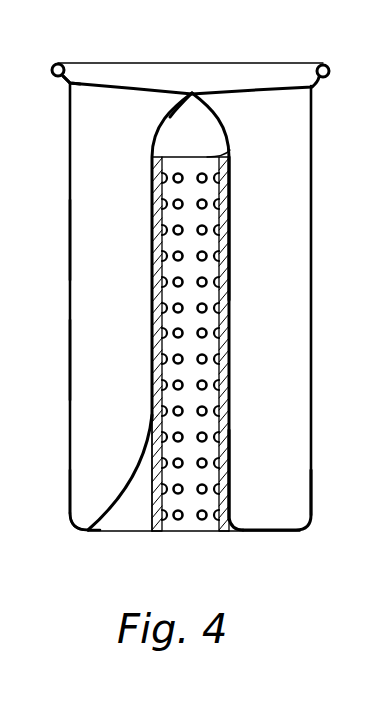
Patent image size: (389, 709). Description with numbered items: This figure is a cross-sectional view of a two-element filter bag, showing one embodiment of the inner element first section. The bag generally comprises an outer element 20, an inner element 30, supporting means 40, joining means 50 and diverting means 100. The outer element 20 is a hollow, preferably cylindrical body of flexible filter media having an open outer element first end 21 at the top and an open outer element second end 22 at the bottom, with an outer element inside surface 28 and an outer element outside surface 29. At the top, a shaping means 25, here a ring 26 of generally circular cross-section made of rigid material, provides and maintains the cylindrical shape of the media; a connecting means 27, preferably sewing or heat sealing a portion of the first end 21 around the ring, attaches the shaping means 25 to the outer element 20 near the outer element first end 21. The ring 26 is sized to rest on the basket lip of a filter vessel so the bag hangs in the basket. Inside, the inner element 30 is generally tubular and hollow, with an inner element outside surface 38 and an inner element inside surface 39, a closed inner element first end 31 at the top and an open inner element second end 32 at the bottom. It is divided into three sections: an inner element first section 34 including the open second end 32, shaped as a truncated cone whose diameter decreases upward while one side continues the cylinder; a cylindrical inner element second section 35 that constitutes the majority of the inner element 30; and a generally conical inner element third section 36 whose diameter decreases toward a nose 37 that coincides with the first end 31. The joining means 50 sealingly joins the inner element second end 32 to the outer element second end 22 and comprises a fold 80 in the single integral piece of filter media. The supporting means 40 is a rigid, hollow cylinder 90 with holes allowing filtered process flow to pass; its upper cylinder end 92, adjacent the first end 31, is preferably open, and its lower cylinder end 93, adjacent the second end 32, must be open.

The outer element 20 is at (70, 291).
The outer element first end 21 is at (68, 91).
The outer element second end 22 is at (68, 492).
The shaping means 25 is at (324, 64).
The ring 26 is at (57, 63).
The connecting means 27 is at (315, 98).
The outer element inside surface 28 is at (72, 240).
The outer element outside surface 29 is at (70, 347).
The inner element 30 is at (160, 407).
The inner element first end 31 is at (221, 125).
The inner element second end 32 is at (231, 478).
The inner element first section 34 is at (122, 490).
The inner element second section 35 is at (150, 318).
The inner element third section 36 is at (163, 127).
The nose 37 is at (192, 92).
The inner element outside surface 38 is at (230, 294).
The inner element inside surface 39 is at (218, 366).
The supporting means 40 is at (199, 533).
The joining means 50 is at (273, 533).
The fold 80 is at (85, 531).
The cylinder 90 is at (225, 240).
The cylinder end 92 is at (233, 148).
The cylinder end 93 is at (173, 533).
The diverting means 100 is at (177, 107).